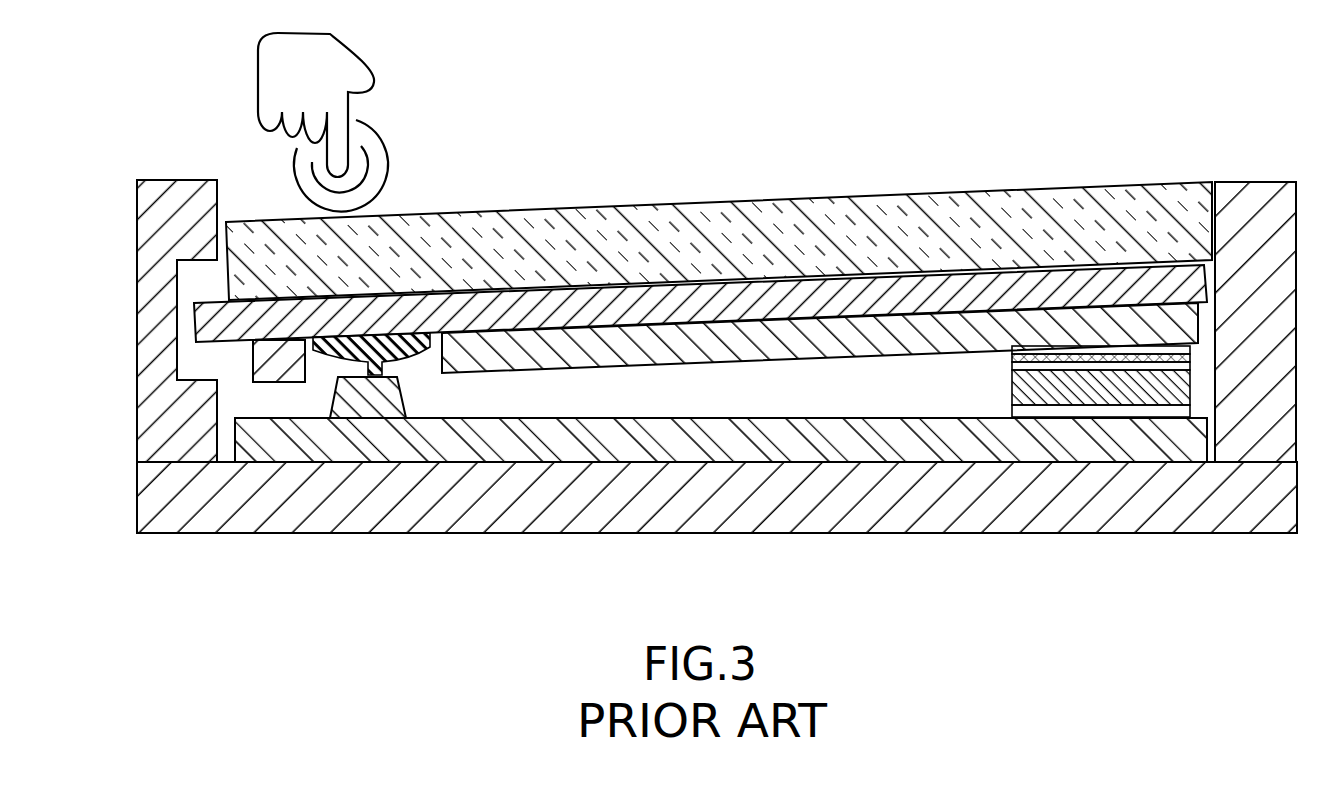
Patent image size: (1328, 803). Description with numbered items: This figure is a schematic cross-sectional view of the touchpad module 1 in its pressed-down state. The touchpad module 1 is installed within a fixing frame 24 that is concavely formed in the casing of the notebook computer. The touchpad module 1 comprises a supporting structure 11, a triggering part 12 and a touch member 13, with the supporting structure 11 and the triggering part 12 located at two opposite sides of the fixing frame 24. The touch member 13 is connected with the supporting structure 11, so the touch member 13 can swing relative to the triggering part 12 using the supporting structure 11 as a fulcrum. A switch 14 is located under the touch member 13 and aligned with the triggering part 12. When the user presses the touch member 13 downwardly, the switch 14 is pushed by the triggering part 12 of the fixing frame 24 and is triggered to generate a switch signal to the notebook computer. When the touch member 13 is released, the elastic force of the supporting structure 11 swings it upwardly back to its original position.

The touchpad module 1 is at (1023, 94).
The supporting structure 11 is at (1100, 392).
The triggering part 12 is at (373, 395).
The touch member 13 is at (1037, 283).
The switch 14 is at (388, 340).
The fixing frame 24 is at (177, 197).